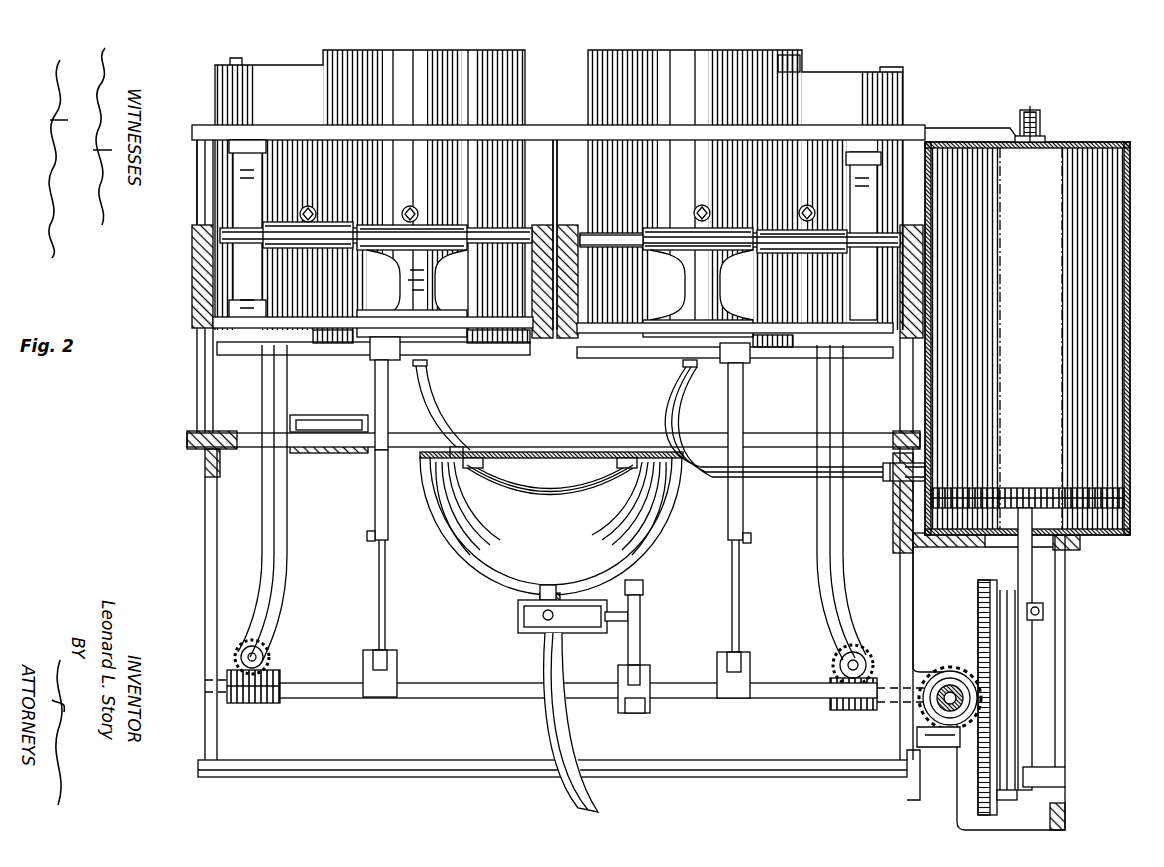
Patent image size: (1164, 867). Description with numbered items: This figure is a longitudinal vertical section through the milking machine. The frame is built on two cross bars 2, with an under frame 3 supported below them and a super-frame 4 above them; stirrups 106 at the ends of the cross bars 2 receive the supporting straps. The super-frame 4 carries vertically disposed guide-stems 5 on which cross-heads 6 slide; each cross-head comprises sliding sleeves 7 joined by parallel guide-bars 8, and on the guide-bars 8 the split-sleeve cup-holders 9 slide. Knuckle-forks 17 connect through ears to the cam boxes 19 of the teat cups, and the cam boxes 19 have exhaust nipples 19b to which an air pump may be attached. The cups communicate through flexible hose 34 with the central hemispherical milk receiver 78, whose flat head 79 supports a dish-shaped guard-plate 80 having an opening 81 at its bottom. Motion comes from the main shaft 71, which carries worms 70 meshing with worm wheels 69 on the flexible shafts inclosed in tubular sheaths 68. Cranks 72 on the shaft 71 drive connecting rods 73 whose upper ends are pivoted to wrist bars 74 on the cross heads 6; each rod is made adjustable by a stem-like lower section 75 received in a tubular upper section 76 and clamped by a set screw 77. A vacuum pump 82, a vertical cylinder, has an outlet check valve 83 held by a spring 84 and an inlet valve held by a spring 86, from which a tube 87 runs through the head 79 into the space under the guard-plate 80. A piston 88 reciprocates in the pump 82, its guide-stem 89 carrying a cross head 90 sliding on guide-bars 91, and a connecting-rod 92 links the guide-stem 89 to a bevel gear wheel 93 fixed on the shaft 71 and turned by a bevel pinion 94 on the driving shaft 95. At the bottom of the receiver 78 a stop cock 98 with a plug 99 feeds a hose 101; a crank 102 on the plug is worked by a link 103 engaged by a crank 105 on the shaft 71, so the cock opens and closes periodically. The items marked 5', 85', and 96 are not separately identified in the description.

The cross bars 2 is at (322, 452).
The under frame 3 is at (390, 760).
The super-frame 4 is at (577, 130).
The guide-stems 5 is at (355, 196).
The lower cross bar 5' is at (735, 375).
The cross-heads 6 is at (188, 276).
The sliding sleeves 7 is at (192, 298).
The guide-bars 8 is at (630, 235).
The cup-holders 9 is at (388, 226).
The knuckle-forks 17 is at (243, 177).
The cam boxes 19 is at (559, 190).
The exhaust nipples 19b is at (918, 70).
The flexible hose 34 is at (432, 385).
The tubular sheaths 68 is at (262, 562).
The worm wheels 69 is at (272, 660).
The worms 70 is at (270, 703).
The main shaft 71 is at (500, 683).
The cranks 72 is at (397, 672).
The connecting rods 73 is at (397, 505).
The wrist bars 74 is at (330, 348).
The lower sections 75 is at (388, 592).
The upper sections 76 is at (370, 490).
The set screws 77 is at (367, 536).
The receiver 78 is at (551, 527).
The head 79 is at (456, 447).
The guard-plate 80 is at (550, 498).
The opening 81 is at (550, 498).
The vacuum pump 82 is at (1027, 338).
The outlet check valve 83 is at (1043, 130).
The spring 84 is at (1035, 112).
The nozzle 85' is at (962, 455).
The spring 86 is at (920, 460).
The tube 87 is at (790, 478).
The piston 88 is at (1020, 488).
The guide-stem 89 is at (1022, 650).
The cross head 90 is at (1040, 767).
The guide-bars 91 is at (1036, 603).
The connecting-rod 92 is at (986, 682).
The bevel gear wheel 93 is at (978, 585).
The bevel pinion 94 is at (950, 667).
The driving shaft 95 is at (930, 720).
The bolt 96 is at (1040, 603).
The stop cock 98 is at (571, 722).
The plug 99 is at (540, 640).
The hose 101 is at (624, 720).
The crank 102 is at (711, 507).
The link 103 is at (640, 618).
The crank 105 is at (650, 672).
The stirrups 106 is at (330, 418).